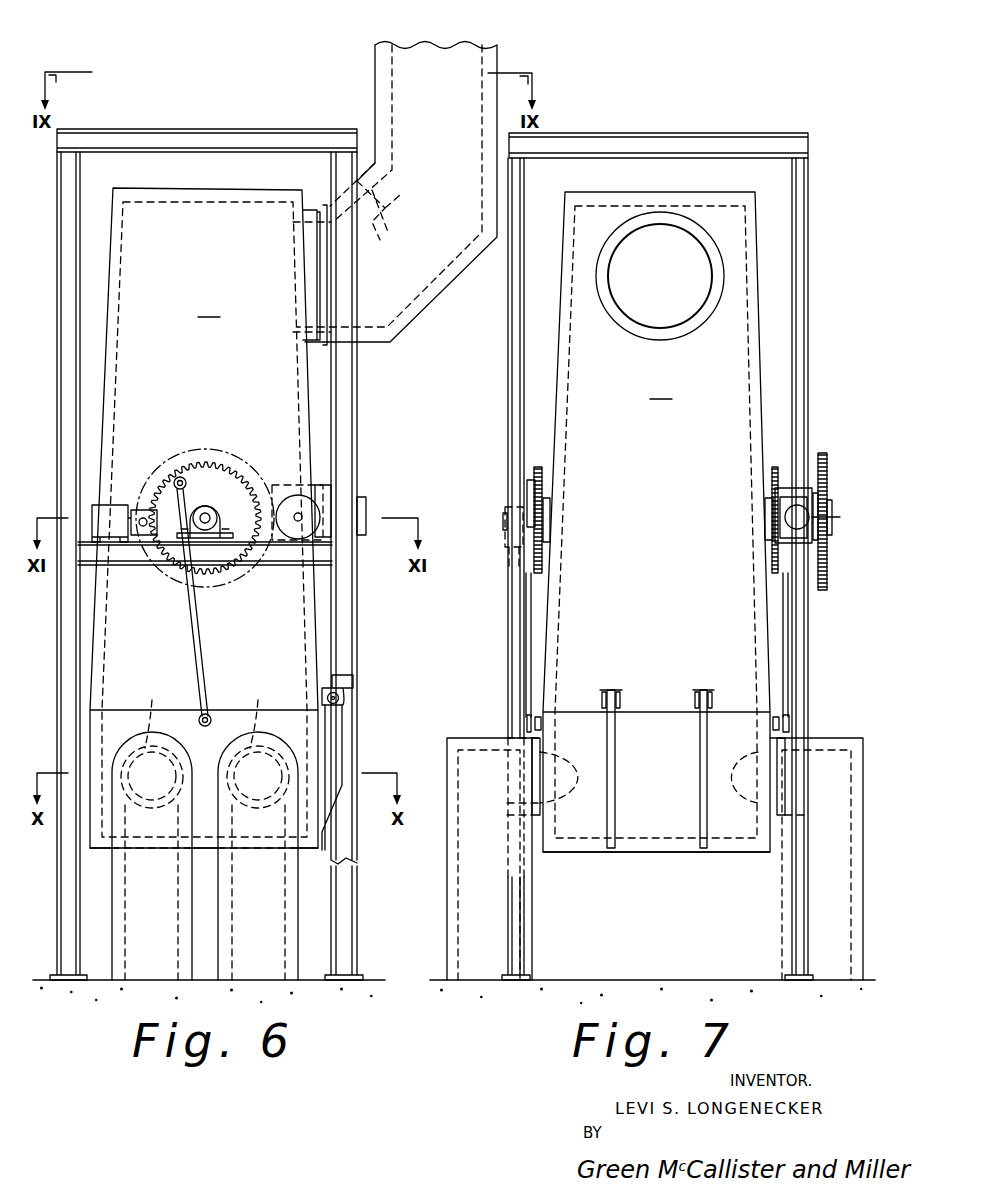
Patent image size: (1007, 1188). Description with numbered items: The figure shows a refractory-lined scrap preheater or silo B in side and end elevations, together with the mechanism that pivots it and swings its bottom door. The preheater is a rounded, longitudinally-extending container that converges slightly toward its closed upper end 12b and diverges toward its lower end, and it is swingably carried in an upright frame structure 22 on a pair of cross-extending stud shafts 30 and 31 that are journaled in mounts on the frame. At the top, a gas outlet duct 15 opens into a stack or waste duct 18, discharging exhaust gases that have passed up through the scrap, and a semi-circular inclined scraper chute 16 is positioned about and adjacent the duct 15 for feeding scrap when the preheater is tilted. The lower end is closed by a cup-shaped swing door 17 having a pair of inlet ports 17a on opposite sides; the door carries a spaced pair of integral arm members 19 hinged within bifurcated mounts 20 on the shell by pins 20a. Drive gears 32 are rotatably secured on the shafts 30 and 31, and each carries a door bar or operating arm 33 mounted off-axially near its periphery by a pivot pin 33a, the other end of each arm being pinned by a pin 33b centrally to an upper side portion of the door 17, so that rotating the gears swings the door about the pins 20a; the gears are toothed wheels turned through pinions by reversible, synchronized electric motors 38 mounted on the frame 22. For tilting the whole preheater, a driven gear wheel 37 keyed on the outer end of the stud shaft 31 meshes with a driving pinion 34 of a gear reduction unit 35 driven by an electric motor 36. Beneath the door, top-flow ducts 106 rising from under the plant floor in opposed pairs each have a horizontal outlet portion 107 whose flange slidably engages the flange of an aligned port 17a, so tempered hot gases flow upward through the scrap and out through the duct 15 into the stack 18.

In FIG. 6, the upper end 12b is at (173, 188).
In FIG. 7, the upper end 12b is at (656, 522).
In FIG. 6, the gas outlet duct 15 is at (309, 210).
In FIG. 7, the gas outlet duct 15 is at (690, 340).
In FIG. 6, the scraper chute 16 is at (382, 240).
In FIG. 6, the swing door 17 is at (290, 712).
In FIG. 7, the swing door 17 is at (650, 838).
In FIG. 6, the inlet ports 17a is at (259, 698).
In FIG. 7, the inlet ports 17a is at (771, 815).
In FIG. 6, the stack or waste duct 18 is at (392, 78).
In FIG. 6, the arm members 19 is at (342, 756).
In FIG. 7, the arm members 19 is at (615, 768).
In FIG. 6, the bifurcated mounts 20 is at (352, 690).
In FIG. 7, the bifurcated mounts 20 is at (611, 690).
In FIG. 6, the pins 20a is at (340, 699).
In FIG. 7, the pins 20a is at (694, 700).
In FIG. 6, the upright frame structure 22 is at (84, 186).
In FIG. 7, the upright frame structure 22 is at (509, 346).
In FIG. 6, the stud shaft 30 is at (236, 484).
In FIG. 7, the stud shaft 30 is at (505, 520).
In FIG. 7, the stud shaft 31 is at (835, 520).
In FIG. 6, the drive gear 32 is at (212, 465).
In FIG. 7, the drive gear 32 is at (536, 470).
In FIG. 6, the door bar or operating arm 33 is at (204, 638).
In FIG. 7, the door bar or operating arm 33 is at (525, 594).
In FIG. 6, the pivot pin 33a is at (180, 477).
In FIG. 7, the pivot pin 33a is at (527, 487).
In FIG. 6, the pin 33b is at (203, 714).
In FIG. 7, the pin 33b is at (525, 722).
In FIG. 6, the driving pinion 34 is at (320, 508).
In FIG. 7, the driving pinion 34 is at (829, 508).
In FIG. 6, the gear reduction unit 35 is at (328, 498).
In FIG. 7, the gear reduction unit 35 is at (796, 490).
In FIG. 6, the electric motor 36 is at (367, 515).
In FIG. 7, the electric motor 36 is at (766, 540).
In FIG. 6, the driven gear wheel 37 is at (220, 458).
In FIG. 7, the driven gear wheel 37 is at (828, 472).
In FIG. 6, the electric motor 38 is at (120, 505).
In FIG. 6, the top-flow ducts 106 is at (172, 950).
In FIG. 7, the top-flow ducts 106 is at (447, 905).
In FIG. 7, the horizontal outlet portion 107 is at (532, 815).